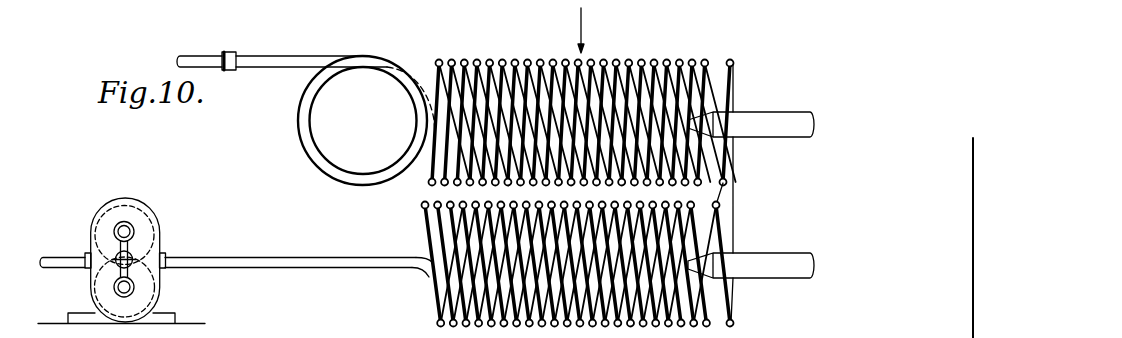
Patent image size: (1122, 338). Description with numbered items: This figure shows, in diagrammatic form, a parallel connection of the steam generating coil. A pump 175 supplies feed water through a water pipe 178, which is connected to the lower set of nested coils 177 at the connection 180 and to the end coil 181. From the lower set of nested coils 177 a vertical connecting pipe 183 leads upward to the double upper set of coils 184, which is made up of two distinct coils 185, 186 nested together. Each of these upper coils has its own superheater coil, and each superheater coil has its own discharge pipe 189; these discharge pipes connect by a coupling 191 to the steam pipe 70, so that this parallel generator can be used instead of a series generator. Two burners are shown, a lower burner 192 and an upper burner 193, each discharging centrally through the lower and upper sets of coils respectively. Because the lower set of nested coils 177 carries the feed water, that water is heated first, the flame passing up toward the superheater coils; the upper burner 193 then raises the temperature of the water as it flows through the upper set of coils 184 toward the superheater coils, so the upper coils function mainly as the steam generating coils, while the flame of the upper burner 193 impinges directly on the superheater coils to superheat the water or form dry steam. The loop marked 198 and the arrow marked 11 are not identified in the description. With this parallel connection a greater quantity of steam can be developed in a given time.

The steam pipe 70 is at (188, 58).
The coupling 191 is at (233, 54).
The discharge pipe 189 is at (296, 58).
The loop 198 is at (337, 176).
The reference direction 11 is at (588, 29).
The coil 186 is at (592, 101).
The upper set of coils 184 is at (680, 63).
The coil 185 is at (689, 90).
The upper burner 193 is at (759, 122).
The vertical connecting pipe 183 is at (731, 198).
The burner 192 is at (748, 259).
The pump 175 is at (138, 223).
The water pipe 178 is at (259, 262).
The coil connection 180 is at (421, 208).
The lower set of nested coils 177 is at (419, 275).
The end coil 181 is at (437, 290).